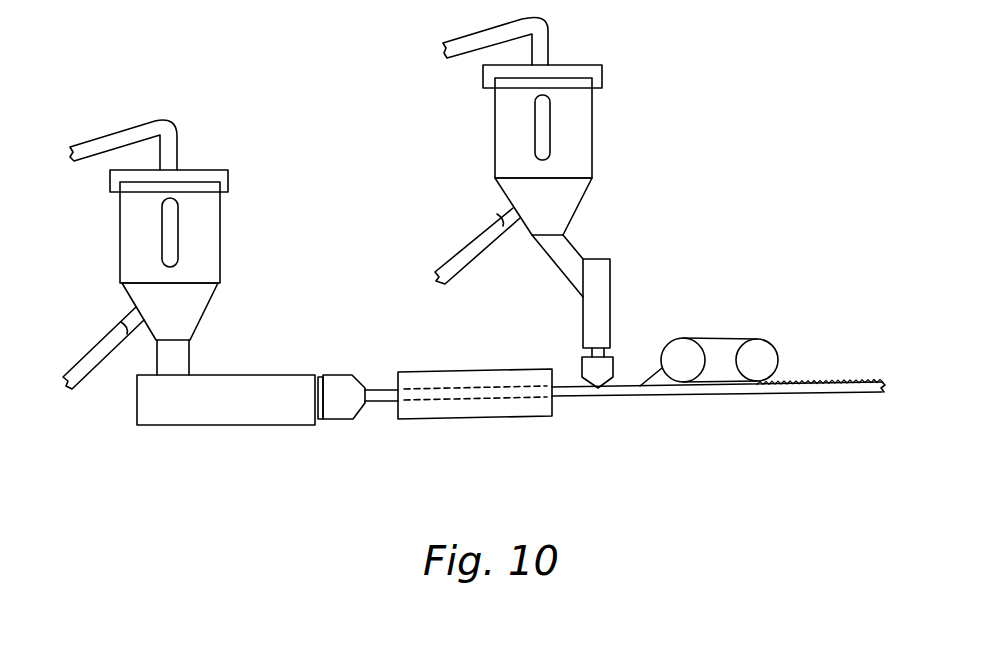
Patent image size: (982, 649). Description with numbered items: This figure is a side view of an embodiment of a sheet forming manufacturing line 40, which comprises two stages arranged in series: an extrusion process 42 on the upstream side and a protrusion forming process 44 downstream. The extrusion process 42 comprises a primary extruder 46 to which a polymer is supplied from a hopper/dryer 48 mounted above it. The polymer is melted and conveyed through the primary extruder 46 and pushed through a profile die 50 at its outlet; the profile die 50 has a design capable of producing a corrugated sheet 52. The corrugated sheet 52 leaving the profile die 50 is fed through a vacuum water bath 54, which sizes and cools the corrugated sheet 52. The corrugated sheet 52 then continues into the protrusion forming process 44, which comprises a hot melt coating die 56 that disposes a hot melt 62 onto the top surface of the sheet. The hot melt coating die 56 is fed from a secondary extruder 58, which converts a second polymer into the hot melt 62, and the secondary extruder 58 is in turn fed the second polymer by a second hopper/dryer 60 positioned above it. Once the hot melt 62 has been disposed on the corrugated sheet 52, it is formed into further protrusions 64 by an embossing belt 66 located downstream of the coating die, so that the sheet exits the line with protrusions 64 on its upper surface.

The sheet forming manufacturing line 40 is at (283, 90).
The extrusion process 42 is at (120, 433).
The protrusion forming process 44 is at (786, 420).
The primary extruder 46 is at (230, 389).
The hopper/dryer 48 is at (198, 315).
The profile die 50 is at (337, 381).
The corrugated sheet 52 is at (379, 376).
The vacuum water bath 54 is at (476, 359).
The hot melt coating die 56 is at (565, 347).
The secondary extruder 58 is at (604, 284).
The second hopper/dryer 60 is at (567, 205).
The hot melt 62 is at (622, 368).
The protrusions 64 is at (820, 358).
The embossing belt 66 is at (728, 319).